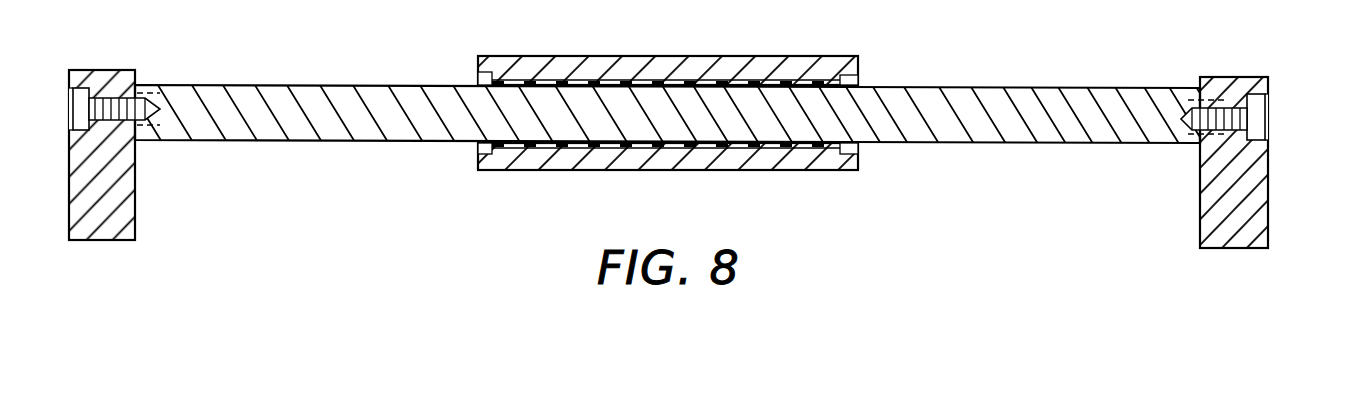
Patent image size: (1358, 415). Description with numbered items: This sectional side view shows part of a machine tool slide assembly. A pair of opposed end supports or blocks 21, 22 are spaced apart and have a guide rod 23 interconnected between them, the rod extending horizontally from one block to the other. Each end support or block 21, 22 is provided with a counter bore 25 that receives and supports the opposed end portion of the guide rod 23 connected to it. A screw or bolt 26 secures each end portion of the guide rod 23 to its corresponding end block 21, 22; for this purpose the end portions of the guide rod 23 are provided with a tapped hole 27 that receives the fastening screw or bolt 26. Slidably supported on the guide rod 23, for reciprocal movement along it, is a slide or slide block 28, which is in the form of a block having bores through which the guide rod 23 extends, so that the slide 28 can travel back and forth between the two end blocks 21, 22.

The end support or block 21 is at (132, 200).
The end support or block 22 is at (1248, 203).
The guide rod 23 is at (900, 98).
The counter bore 25 is at (1215, 147).
The screw or bolt 26 is at (1262, 115).
The tapped hole 27 is at (1189, 99).
The slide or slide block 28 is at (762, 62).